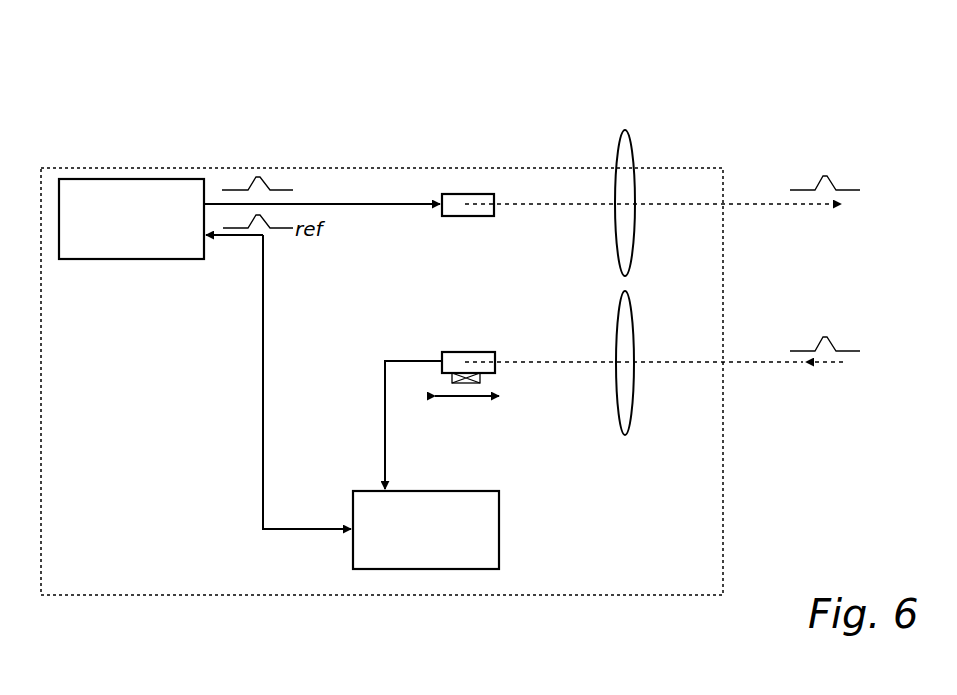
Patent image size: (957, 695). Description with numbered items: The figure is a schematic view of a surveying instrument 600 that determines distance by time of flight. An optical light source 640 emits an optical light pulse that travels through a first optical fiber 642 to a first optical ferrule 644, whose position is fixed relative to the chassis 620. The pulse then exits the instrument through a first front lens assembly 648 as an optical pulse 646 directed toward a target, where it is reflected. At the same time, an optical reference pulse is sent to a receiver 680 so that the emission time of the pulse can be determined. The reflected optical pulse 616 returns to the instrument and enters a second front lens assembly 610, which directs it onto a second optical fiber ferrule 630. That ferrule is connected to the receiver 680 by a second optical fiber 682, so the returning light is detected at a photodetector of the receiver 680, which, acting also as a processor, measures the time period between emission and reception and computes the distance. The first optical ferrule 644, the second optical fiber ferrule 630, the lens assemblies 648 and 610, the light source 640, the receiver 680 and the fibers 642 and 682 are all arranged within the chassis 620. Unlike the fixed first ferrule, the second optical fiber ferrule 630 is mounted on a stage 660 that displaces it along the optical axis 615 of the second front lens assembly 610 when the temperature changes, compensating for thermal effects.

The surveying instrument 600 is at (288, 95).
The optical light source 640 is at (145, 179).
The first optical fiber 642 is at (328, 195).
The first optical ferrule 644 is at (470, 194).
The chassis 620 is at (540, 168).
The first front lens assembly 648 is at (615, 245).
The optical pulse 646 is at (836, 172).
The second optical fiber ferrule 630 is at (470, 352).
The stage 660 is at (482, 378).
The optical axis 615 is at (700, 360).
The second front lens assembly 610 is at (615, 335).
The reflected optical pulse 616 is at (836, 333).
The second optical fiber 682 is at (387, 457).
The receiver 680 is at (500, 530).